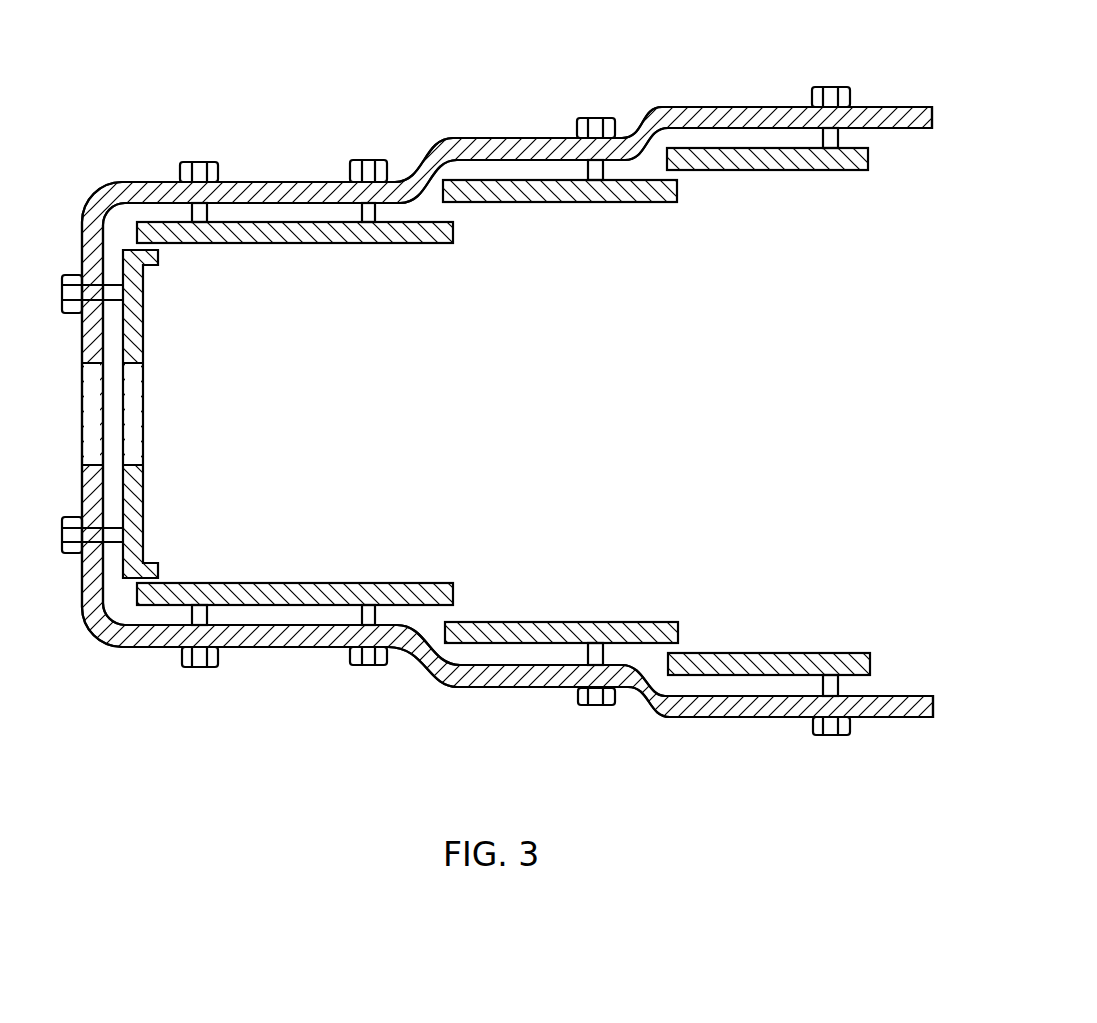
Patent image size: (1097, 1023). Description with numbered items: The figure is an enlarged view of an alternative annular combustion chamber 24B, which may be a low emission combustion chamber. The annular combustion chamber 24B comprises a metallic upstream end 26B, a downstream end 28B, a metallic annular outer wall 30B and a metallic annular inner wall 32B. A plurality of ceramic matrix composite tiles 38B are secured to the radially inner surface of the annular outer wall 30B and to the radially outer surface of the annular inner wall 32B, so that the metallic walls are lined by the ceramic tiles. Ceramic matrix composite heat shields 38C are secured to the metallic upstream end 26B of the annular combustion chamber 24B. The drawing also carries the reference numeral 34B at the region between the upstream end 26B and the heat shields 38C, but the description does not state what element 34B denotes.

The annular combustion chamber 24B is at (722, 88).
The metallic upstream end 26B is at (103, 640).
The downstream end 28B is at (885, 107).
The metallic annular outer wall 30B is at (498, 136).
The metallic annular inner wall 32B is at (487, 688).
The spacer gap 34B is at (107, 425).
The ceramic matrix composite tiles 38B is at (783, 169).
The ceramic matrix composite heat shields 38C is at (145, 293).